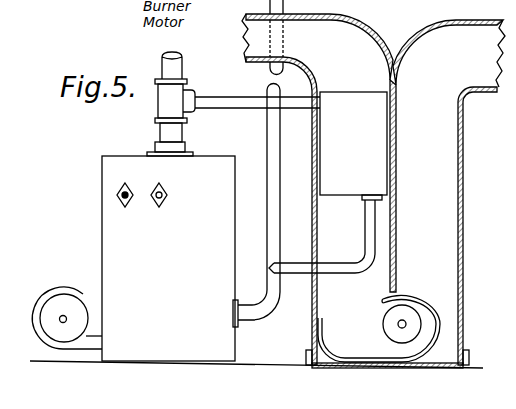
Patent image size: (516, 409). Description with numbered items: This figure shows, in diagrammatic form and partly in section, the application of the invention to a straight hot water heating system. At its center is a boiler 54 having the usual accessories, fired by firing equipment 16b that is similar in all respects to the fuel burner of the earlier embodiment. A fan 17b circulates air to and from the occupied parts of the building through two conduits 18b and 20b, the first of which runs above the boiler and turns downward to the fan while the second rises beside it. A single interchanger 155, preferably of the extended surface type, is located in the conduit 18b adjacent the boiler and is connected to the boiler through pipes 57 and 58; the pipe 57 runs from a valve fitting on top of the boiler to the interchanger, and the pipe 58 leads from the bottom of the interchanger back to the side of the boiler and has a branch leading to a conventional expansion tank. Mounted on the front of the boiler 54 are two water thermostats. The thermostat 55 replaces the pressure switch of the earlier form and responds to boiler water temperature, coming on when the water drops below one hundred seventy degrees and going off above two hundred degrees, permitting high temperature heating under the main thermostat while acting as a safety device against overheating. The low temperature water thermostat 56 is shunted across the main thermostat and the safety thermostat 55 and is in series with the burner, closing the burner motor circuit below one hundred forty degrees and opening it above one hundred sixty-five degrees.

The boiler 54 is at (102, 171).
The thermostat 55 is at (125, 207).
The low temperature water thermostat 56 is at (162, 207).
The pipe 57 is at (209, 97).
The pipe 58 is at (337, 262).
The interchanger 155 is at (353, 146).
The firing equipment 16b is at (63, 293).
The fan 17b is at (405, 298).
The conduit 18b is at (355, 191).
The conduit 20b is at (428, 25).